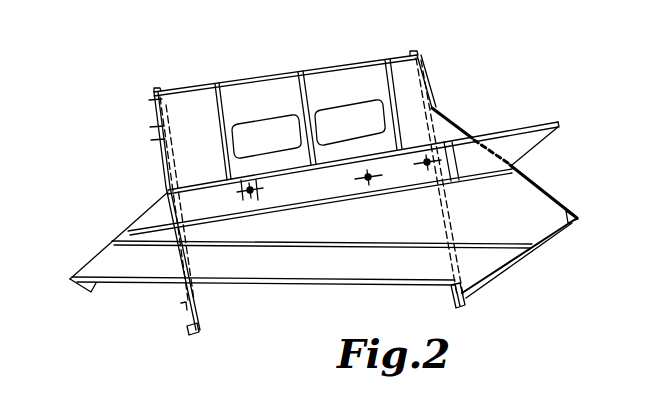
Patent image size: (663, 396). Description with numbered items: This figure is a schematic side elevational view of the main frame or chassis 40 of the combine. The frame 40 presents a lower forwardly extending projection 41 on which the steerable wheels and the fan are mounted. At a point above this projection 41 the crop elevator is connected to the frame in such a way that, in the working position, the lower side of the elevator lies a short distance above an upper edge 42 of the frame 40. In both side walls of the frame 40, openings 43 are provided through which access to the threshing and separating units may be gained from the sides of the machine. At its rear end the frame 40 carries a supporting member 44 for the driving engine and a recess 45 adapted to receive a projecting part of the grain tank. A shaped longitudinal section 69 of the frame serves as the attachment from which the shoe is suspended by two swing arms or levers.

The frame or chassis 40 is at (191, 64).
The lower forwardly extending projection 41 is at (72, 251).
The upper edge 42 is at (124, 198).
The openings 43 is at (333, 117).
The supporting member 44 is at (523, 123).
The recess 45 is at (547, 163).
The shaped longitudinal section 69 is at (280, 270).